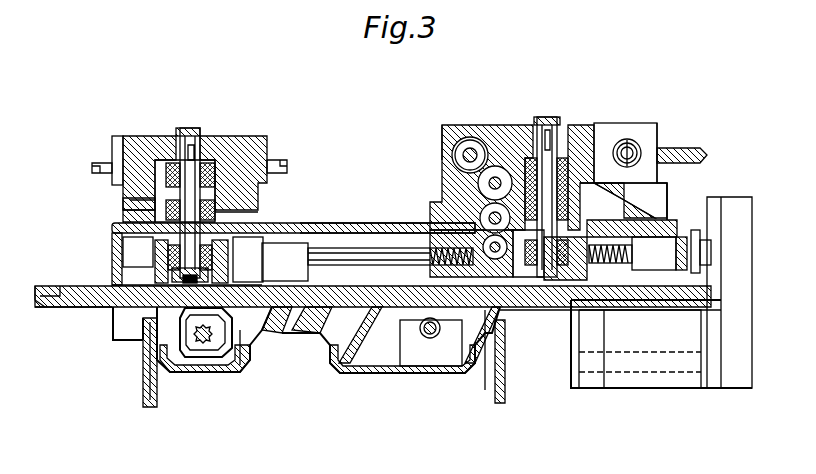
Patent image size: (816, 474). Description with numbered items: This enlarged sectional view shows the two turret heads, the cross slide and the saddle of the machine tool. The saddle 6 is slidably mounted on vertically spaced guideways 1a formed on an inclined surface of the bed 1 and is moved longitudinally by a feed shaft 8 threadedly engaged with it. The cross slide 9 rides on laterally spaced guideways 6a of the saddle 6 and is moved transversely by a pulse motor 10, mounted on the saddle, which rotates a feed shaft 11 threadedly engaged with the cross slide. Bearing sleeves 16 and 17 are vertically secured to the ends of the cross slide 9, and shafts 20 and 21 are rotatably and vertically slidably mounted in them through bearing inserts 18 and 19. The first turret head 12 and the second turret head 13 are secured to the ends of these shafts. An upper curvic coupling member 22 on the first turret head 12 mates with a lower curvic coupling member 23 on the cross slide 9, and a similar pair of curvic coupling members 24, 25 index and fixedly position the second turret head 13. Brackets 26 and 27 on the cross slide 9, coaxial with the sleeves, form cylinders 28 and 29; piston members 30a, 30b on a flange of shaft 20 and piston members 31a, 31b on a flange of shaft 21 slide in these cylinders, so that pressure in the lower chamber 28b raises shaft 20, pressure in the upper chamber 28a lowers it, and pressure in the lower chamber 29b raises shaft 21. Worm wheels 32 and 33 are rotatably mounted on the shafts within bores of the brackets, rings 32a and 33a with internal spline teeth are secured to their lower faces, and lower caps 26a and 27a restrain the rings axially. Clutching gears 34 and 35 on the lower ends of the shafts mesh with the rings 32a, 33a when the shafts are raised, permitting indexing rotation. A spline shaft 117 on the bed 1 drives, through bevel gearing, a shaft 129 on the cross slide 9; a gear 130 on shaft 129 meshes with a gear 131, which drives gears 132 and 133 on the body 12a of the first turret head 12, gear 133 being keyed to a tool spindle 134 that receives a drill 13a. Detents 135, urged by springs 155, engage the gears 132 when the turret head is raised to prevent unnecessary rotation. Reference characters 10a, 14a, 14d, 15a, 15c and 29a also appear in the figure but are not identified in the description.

The bed 1 is at (332, 375).
The guideways 1a is at (300, 345).
The saddle 6 is at (60, 307).
The guideways 6a is at (40, 300).
The feed shaft 8 is at (430, 338).
The cross slide 9 is at (345, 225).
The pulse motor 10 is at (700, 385).
The bearing 10a is at (530, 160).
The feed shaft 11 is at (640, 272).
The first turret head 12 is at (677, 187).
The body of first turret head 12a is at (445, 130).
The second turret head 13 is at (268, 205).
The drill 13a is at (145, 158).
The arm 14a is at (665, 160).
The rod 14d is at (690, 150).
The stop lug 15a is at (290, 168).
The stop lug 15c is at (92, 168).
The bearing sleeve 16 is at (578, 150).
The bearing sleeve 17 is at (210, 165).
The bearing insert 18 is at (540, 118).
The bearing insert 19 is at (173, 160).
The shaft 20 is at (562, 130).
The shaft 21 is at (188, 128).
The upper curvic coupling member 22 is at (665, 148).
The lower curvic coupling member 23 is at (695, 275).
The curvic coupling member 24 is at (240, 185).
The curvic coupling member 25 is at (248, 258).
The bracket 26 is at (612, 268).
The lower cap 26a is at (515, 312).
The bracket 27 is at (112, 240).
The lower cap 27a is at (160, 322).
The cylinder 28 is at (482, 240).
The upper chamber 28a is at (598, 168).
The lower chamber 28b is at (625, 205).
The cylinder 29 is at (130, 160).
The bearing bush 29a is at (215, 262).
The lower chamber 29b is at (212, 276).
The piston member 30a is at (625, 150).
The piston member 30b is at (622, 176).
The piston member 31a is at (125, 205).
The piston member 31b is at (112, 226).
The worm wheel 32 is at (525, 282).
The ring 32a is at (590, 240).
The worm wheel 33 is at (140, 255).
The ring 33a is at (247, 330).
The clutching gear 34 is at (547, 282).
The clutching gear 35 is at (172, 330).
The spline shaft 117 is at (210, 340).
The shaft 129 is at (500, 360).
The gear 130 is at (425, 248).
The gear 131 is at (445, 232).
The gear 132 is at (480, 210).
The gear 133 is at (462, 162).
The tool spindle 134 is at (455, 140).
The detent 135 is at (492, 166).
The spring 155 is at (468, 138).